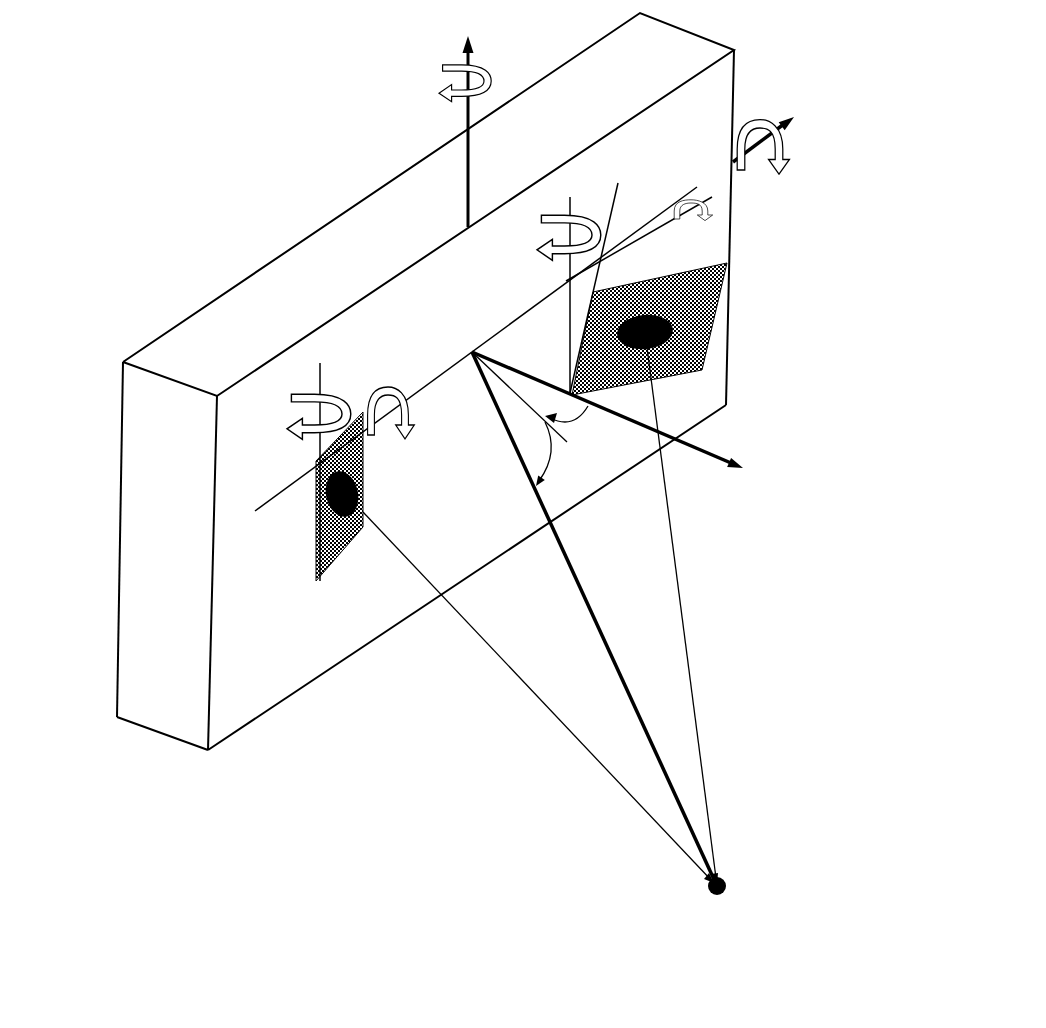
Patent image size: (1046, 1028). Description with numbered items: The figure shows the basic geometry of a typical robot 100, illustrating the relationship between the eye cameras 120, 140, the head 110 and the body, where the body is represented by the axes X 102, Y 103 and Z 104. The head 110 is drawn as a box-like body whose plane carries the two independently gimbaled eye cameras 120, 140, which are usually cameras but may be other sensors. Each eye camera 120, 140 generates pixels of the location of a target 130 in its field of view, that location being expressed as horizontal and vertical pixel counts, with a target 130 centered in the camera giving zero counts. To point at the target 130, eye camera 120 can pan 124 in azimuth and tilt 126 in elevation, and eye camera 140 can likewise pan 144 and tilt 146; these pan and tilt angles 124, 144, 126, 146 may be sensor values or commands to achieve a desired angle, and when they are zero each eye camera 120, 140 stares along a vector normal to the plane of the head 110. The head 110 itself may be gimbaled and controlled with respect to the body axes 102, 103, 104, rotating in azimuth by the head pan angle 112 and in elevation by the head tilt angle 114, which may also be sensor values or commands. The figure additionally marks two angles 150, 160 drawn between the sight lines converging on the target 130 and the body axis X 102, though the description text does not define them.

The robot 100 is at (482, 506).
The X axis 102 is at (635, 418).
The Y axis 103 is at (789, 135).
The Z axis 104 is at (491, 116).
The head 110 is at (212, 297).
The head pan angle 112 is at (432, 85).
The head tilt angle 114 is at (792, 150).
The eye camera 120 is at (343, 504).
The pan angle 124 is at (289, 416).
The tilt angle 126 is at (399, 399).
The target 130 is at (554, 636).
The eye camera 140 is at (668, 329).
The pan angle 144 is at (540, 237).
The tilt angle 146 is at (687, 227).
The gaze angle 150 is at (560, 454).
The gaze angle 160 is at (539, 397).